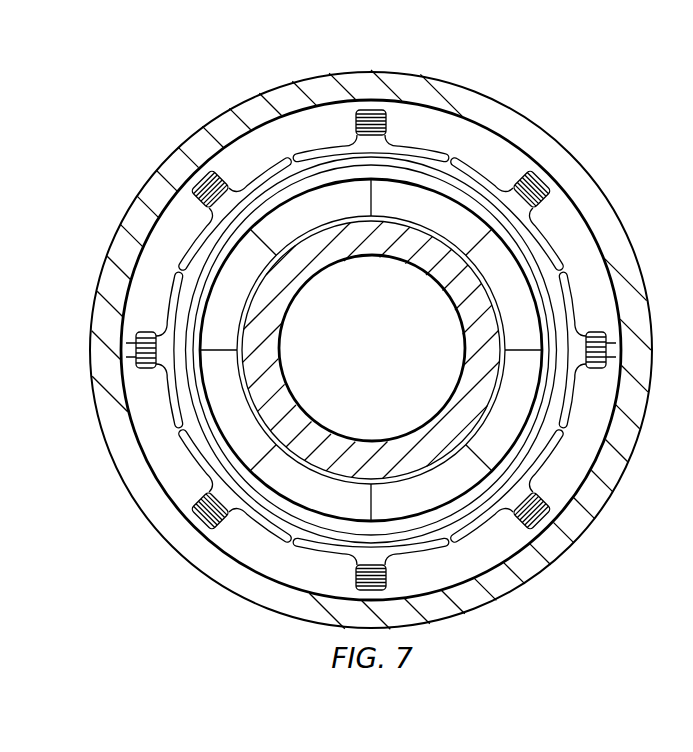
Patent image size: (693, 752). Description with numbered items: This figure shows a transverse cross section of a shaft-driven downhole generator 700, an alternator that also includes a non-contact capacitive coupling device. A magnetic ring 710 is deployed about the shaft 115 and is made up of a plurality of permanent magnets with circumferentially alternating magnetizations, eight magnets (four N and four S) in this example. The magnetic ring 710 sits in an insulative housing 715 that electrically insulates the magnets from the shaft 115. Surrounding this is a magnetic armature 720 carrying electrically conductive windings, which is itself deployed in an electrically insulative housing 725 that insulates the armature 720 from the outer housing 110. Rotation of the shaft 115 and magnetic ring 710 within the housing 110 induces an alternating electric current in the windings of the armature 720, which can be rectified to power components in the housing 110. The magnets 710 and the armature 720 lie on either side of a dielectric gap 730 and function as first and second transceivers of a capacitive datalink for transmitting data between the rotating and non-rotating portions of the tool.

The downhole generator 700 is at (457, 144).
The housing 110 is at (285, 86).
The shaft 115 is at (478, 345).
The magnetic ring 710 is at (398, 200).
The insulative housing 715 is at (333, 223).
The magnetic armature 720 is at (163, 372).
The electrically insulative housing 725 is at (180, 222).
The dielectric gap 730 is at (302, 185).